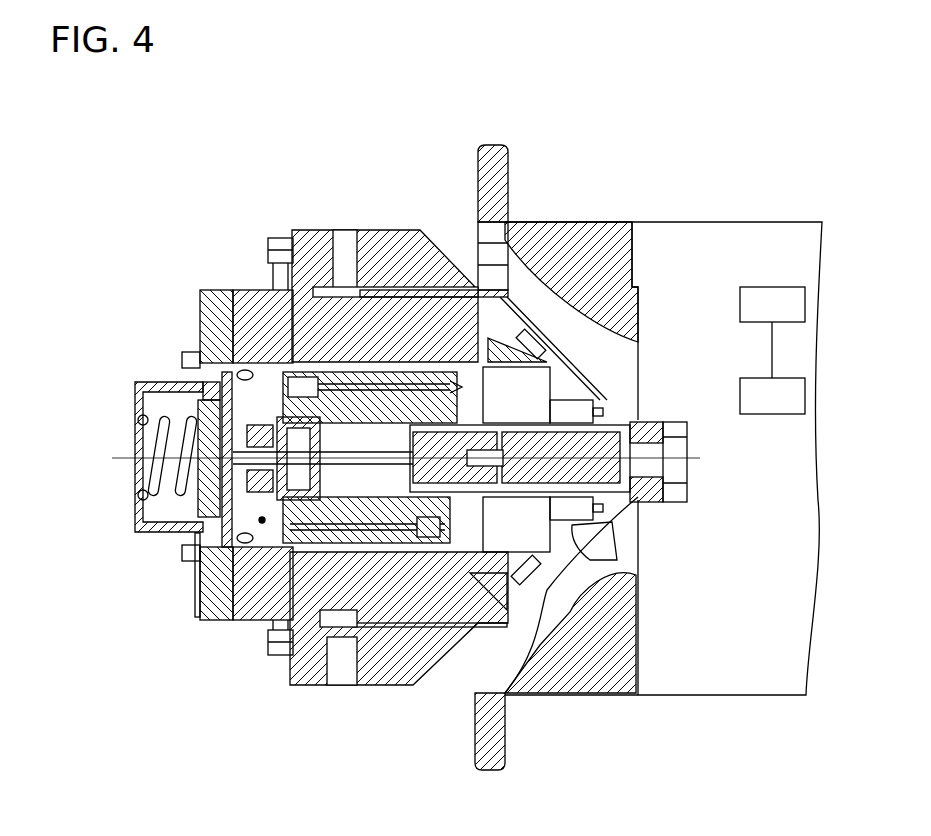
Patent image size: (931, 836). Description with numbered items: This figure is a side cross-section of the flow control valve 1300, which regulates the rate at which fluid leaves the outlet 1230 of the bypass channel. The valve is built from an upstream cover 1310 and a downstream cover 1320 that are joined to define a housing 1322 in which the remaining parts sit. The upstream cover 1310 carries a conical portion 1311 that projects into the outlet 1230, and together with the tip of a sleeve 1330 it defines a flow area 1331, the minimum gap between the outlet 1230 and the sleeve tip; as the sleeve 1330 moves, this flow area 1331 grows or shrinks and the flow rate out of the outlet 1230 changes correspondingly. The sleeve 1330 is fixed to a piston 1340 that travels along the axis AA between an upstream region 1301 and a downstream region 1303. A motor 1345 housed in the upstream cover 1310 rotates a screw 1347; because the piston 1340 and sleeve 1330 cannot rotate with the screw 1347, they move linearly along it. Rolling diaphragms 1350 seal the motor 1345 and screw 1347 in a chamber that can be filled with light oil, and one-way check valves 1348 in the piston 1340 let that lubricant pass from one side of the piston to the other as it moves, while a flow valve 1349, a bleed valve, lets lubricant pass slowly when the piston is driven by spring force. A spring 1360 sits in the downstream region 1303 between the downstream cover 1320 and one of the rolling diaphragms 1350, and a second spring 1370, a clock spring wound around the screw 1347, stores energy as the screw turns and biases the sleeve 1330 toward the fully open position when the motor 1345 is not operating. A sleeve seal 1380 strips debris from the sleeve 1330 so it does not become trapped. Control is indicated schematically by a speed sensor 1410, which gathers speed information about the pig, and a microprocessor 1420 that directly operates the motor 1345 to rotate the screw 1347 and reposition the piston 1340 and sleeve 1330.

The outlet 1230 is at (618, 558).
The flow control valve 1300 is at (72, 447).
The upstream region 1301 is at (477, 540).
The downstream region 1303 is at (263, 385).
The upstream cover 1310 is at (560, 358).
The conical portion 1311 is at (613, 403).
The downstream cover 1320 is at (134, 381).
The housing 1322 is at (262, 520).
The sleeve 1330 is at (426, 627).
The flow area 1331 is at (478, 216).
The piston 1340 is at (345, 373).
The motor 1345 is at (483, 477).
The screw 1347 is at (202, 603).
The check valve 1348 is at (292, 378).
The flow valve 1349 is at (320, 542).
The rolling diaphragm 1350 is at (413, 370).
The spring 1360 is at (181, 494).
The second spring 1370 is at (265, 425).
The sleeve seal 1380 is at (450, 647).
The speed sensor 1410 is at (772, 396).
The microprocessor 1420 is at (772, 332).